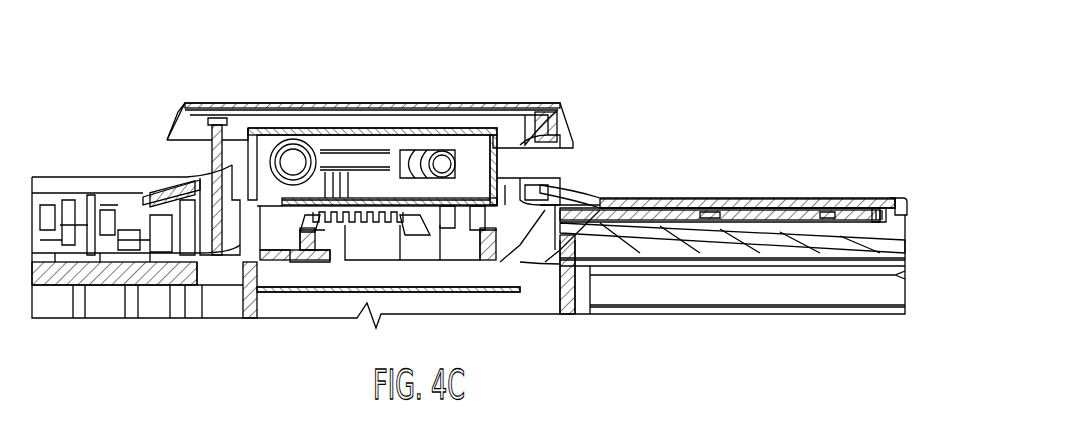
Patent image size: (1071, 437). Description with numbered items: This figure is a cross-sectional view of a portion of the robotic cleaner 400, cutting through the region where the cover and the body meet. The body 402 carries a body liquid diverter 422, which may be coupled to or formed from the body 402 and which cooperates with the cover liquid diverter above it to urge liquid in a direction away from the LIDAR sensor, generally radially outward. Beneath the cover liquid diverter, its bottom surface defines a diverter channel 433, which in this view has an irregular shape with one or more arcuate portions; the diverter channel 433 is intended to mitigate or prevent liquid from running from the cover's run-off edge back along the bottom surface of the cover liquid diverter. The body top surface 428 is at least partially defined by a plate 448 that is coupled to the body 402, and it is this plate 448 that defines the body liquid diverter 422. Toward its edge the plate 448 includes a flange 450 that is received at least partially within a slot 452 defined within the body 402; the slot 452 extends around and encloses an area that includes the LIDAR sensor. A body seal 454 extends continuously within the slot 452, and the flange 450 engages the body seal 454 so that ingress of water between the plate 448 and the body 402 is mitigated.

The robotic cleaner 400 is at (105, 73).
The diverter channel 433 is at (178, 145).
The body liquid diverter 422 is at (598, 167).
The body top surface 428 is at (746, 200).
The plate 448 is at (778, 199).
The flange 450 is at (888, 208).
The body 402 is at (895, 205).
The slot 452 is at (873, 223).
The body seal 454 is at (903, 226).